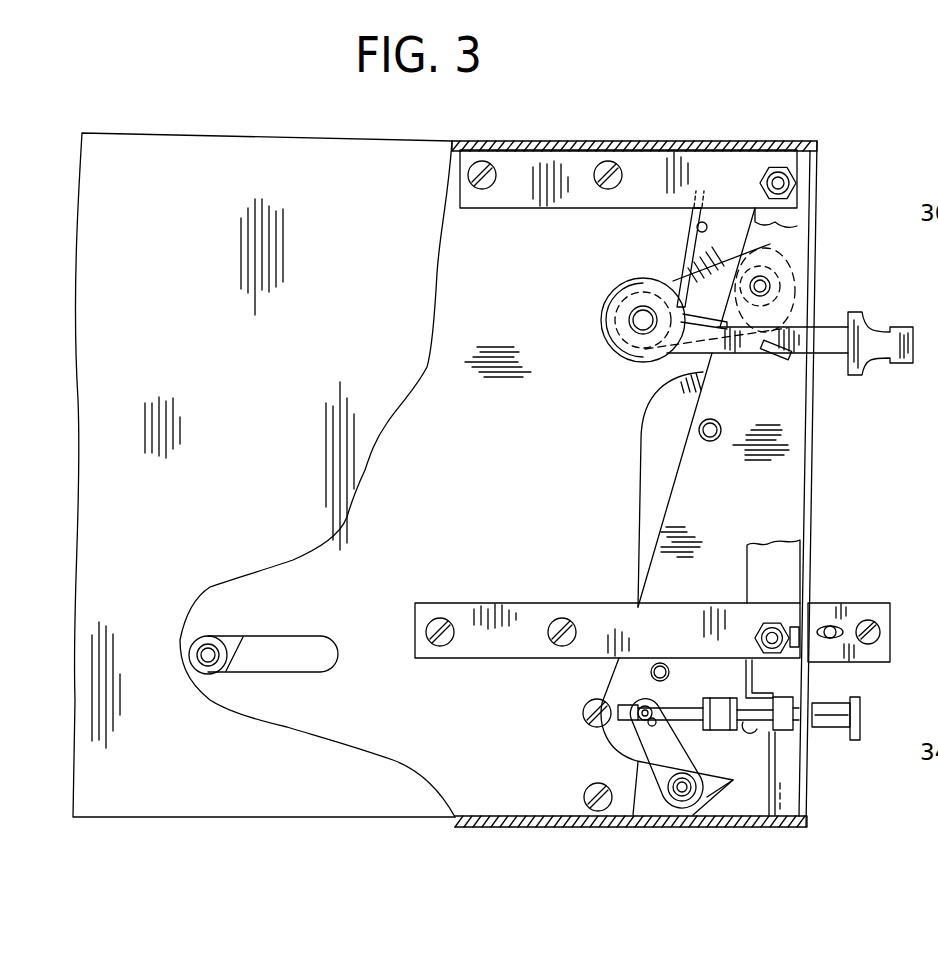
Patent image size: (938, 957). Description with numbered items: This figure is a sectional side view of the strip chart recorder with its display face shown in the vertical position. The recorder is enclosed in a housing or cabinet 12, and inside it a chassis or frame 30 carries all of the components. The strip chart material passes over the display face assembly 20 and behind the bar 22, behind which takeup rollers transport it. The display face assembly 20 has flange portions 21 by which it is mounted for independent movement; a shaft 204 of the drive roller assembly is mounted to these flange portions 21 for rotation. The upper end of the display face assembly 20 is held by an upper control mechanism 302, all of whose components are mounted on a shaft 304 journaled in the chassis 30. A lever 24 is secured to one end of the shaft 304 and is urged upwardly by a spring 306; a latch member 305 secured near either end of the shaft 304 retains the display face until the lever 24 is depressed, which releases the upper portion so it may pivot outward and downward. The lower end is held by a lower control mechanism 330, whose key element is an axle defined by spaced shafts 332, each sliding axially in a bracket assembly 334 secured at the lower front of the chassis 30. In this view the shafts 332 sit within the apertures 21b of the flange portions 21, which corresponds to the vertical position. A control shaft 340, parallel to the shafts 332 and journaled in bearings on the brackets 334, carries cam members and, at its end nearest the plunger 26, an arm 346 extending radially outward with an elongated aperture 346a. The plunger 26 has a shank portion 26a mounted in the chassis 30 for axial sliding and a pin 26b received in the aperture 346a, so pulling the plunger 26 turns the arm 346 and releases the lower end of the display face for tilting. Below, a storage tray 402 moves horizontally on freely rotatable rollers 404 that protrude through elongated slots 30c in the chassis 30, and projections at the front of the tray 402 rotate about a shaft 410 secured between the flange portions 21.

The housing or cabinet 12 is at (313, 133).
The display face assembly 20 is at (813, 503).
The flange portions 21 is at (792, 415).
The aperture 21b is at (747, 737).
The bar 22 is at (890, 606).
The lever 24 is at (877, 338).
The plunger 26 is at (832, 722).
The shank portion 26a is at (688, 708).
The pin 26b is at (642, 707).
The chassis or frame 30 is at (506, 196).
The elongated slots 30c is at (320, 640).
The shaft 204 is at (770, 285).
The upper control mechanism 302 is at (596, 306).
The shaft 304 is at (640, 326).
The latch member 305 is at (686, 290).
The spring 306 is at (690, 240).
The lower control mechanism 330 is at (566, 762).
The shafts 332 is at (762, 720).
The bracket assembly 334 is at (728, 800).
The control shaft 340 is at (681, 792).
The arm 346 is at (660, 745).
The elongated aperture 346a is at (646, 719).
The tray 402 is at (642, 545).
The rollers 404 is at (238, 650).
The shaft 410 is at (659, 666).